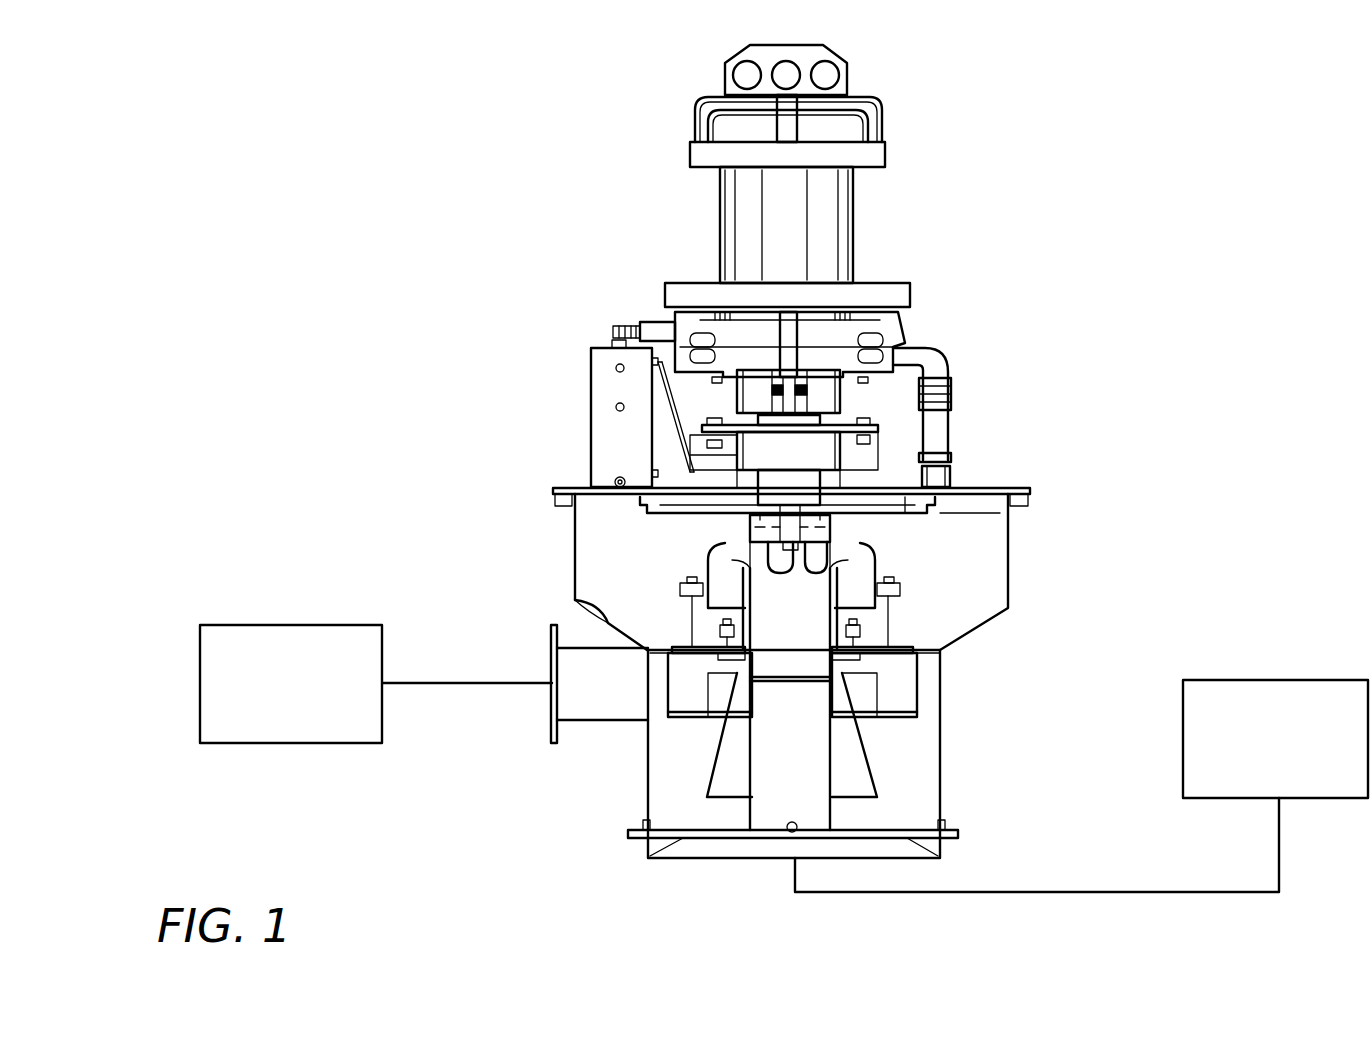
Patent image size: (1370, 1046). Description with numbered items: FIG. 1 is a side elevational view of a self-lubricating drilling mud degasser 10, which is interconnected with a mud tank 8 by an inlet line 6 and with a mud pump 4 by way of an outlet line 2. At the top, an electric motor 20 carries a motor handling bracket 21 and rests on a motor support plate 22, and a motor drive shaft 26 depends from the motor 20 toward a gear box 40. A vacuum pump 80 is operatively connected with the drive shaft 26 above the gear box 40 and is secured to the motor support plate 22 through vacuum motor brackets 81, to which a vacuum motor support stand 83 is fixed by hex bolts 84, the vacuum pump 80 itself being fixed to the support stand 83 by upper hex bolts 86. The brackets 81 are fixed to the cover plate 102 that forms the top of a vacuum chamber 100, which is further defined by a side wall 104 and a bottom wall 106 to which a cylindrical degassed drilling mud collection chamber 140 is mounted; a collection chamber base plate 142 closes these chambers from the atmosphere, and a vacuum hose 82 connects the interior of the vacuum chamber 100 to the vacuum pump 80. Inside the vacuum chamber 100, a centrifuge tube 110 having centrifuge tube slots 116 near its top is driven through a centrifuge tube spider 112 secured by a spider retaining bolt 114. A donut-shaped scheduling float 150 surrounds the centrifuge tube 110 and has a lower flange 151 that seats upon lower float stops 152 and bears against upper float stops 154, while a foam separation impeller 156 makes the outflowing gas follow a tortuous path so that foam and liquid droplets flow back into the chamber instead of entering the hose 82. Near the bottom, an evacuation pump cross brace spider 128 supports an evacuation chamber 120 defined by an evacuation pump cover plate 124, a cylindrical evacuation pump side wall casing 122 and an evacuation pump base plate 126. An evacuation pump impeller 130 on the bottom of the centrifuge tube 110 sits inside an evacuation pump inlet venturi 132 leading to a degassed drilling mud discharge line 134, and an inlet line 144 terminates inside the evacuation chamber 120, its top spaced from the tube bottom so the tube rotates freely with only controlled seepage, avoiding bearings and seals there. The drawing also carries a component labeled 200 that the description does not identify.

The outlet line 2 is at (440, 683).
The mud pump 4 is at (314, 625).
The inlet line 6 is at (1155, 890).
The mud tank 8 is at (1305, 680).
The drilling mud degasser 10 is at (404, 374).
The electric motor 20 is at (845, 188).
The motor handling bracket 21 is at (742, 68).
The motor support plate 22 is at (683, 292).
The motor drive shaft 26 is at (793, 369).
The gear box 40 is at (847, 455).
The vacuum pump 80 is at (903, 322).
The vacuum motor brackets 81 is at (663, 445).
The vacuum hose 82 is at (940, 365).
The vacuum motor support stand 83 is at (690, 462).
The hex bolts 84 is at (923, 414).
The upper hex bolts 86 is at (923, 392).
The vacuum chamber 100 is at (498, 517).
The cover plate 102 is at (578, 482).
The side wall 104 is at (575, 553).
The bottom wall 106 is at (575, 599).
The centrifuge tube 110 is at (745, 560).
The centrifuge tube spider 112 is at (730, 530).
The spider retaining bolt 114 is at (842, 537).
The centrifuge tube slots 116 is at (977, 530).
The evacuation chamber 120 is at (688, 692).
The cylindrical evacuation pump side wall casing 122 is at (915, 683).
The evacuation pump cover plate 124 is at (917, 660).
The evacuation pump base plate 126 is at (910, 703).
The evacuation pump cross brace spider 128 is at (960, 642).
The evacuation pump impeller 130 is at (715, 698).
The evacuation pump inlet venturi 132 is at (842, 700).
The degassed drilling mud discharge line 134 is at (575, 745).
The cylindrical degassed drilling mud collection chamber 140 is at (997, 518).
The collection chamber base plate 142 is at (887, 838).
The inlet line 144 is at (770, 810).
The scheduling float 150 is at (865, 563).
The lower flange 151 is at (900, 608).
The lower float stops 152 is at (860, 624).
The upper float stops 154 is at (900, 589).
The foam separation impeller 156 is at (930, 503).
The control block 200 is at (590, 392).